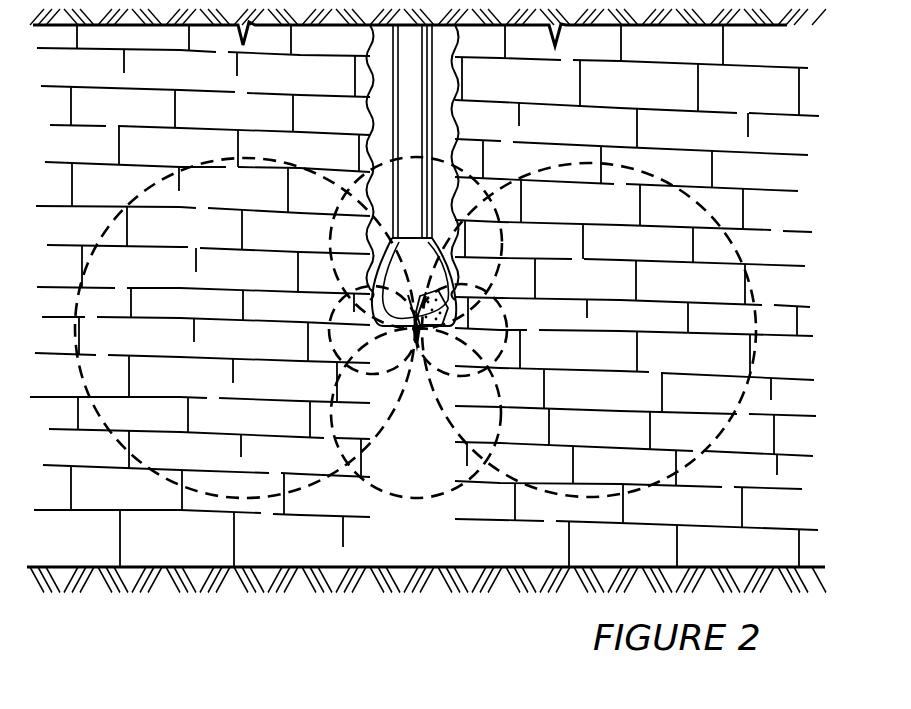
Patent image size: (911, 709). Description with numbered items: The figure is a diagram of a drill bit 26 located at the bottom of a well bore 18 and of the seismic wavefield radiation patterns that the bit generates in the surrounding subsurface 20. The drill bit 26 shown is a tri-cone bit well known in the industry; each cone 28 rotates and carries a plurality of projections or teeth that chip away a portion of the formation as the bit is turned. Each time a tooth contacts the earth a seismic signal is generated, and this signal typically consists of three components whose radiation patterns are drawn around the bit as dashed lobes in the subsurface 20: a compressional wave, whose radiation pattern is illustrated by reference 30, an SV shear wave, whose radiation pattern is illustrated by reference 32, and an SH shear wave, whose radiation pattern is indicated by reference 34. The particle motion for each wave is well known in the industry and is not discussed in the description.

The well bore 18 is at (452, 106).
The subsurface 20 is at (727, 58).
The drill bit 26 is at (432, 250).
The cone 28 is at (447, 316).
The compressional wave radiation pattern 30 is at (333, 250).
The SV shear wave radiation pattern 32 is at (109, 229).
The SH shear wave radiation pattern 34 is at (340, 362).